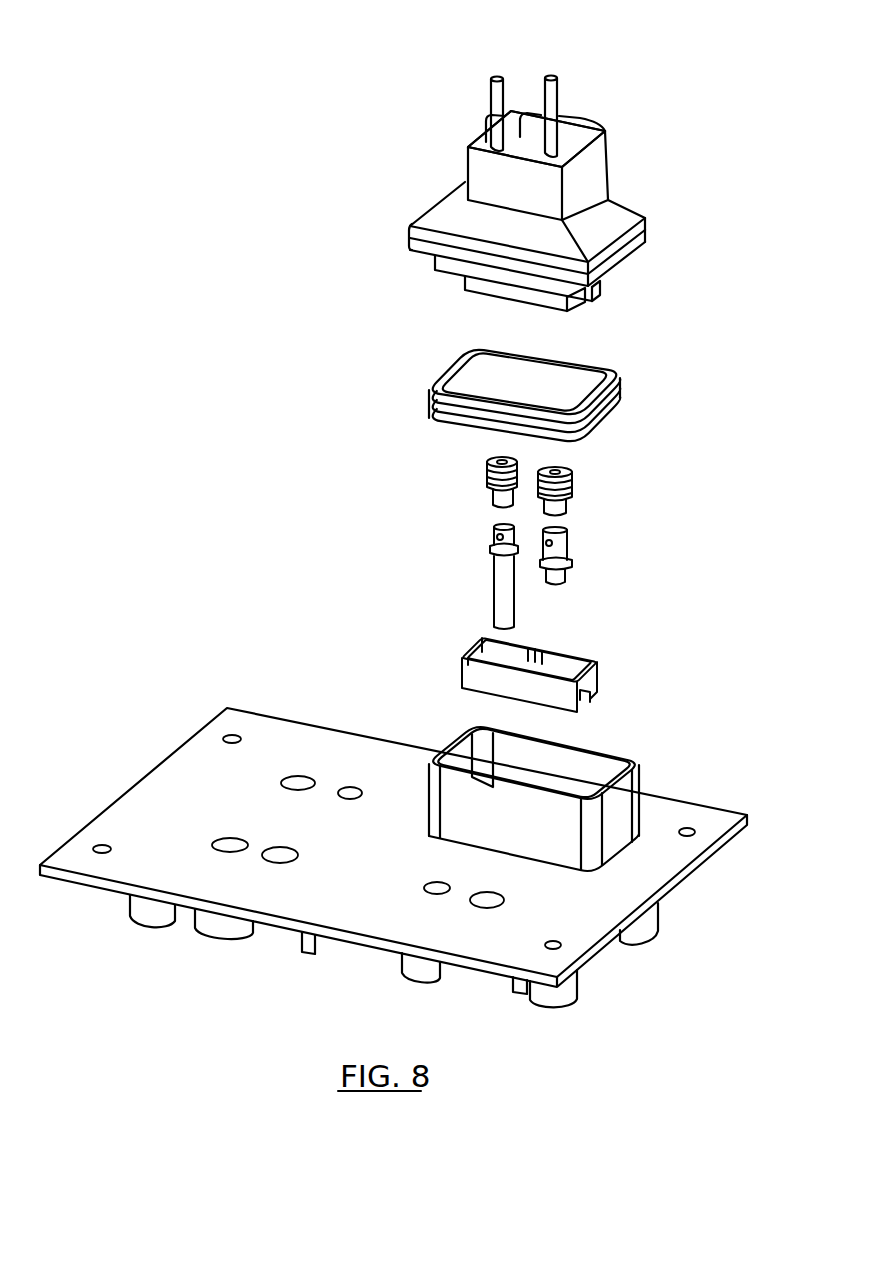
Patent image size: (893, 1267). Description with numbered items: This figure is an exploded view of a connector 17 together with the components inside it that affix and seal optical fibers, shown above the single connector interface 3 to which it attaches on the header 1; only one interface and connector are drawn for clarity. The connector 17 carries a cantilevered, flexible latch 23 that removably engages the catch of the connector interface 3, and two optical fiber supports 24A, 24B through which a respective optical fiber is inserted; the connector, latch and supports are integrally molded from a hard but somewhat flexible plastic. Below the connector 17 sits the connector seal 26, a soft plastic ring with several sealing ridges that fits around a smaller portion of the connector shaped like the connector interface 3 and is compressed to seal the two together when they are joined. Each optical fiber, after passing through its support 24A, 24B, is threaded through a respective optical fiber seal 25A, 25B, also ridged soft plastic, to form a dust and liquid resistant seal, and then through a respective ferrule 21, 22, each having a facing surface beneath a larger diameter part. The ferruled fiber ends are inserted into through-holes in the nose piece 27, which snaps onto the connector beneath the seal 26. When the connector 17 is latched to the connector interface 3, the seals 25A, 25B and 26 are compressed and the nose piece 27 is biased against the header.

The header 1 is at (715, 805).
The connector interface 3 is at (637, 752).
The connector 17 is at (613, 217).
The ferrule 21 is at (490, 573).
The ferrule 22 is at (573, 545).
The latch 23 is at (583, 118).
The optical fiber support 24A is at (488, 78).
The optical fiber support 24B is at (555, 75).
The optical fiber seal 25A is at (485, 470).
The optical fiber seal 25B is at (573, 472).
The connector seal 26 is at (437, 373).
The nose piece 27 is at (458, 660).